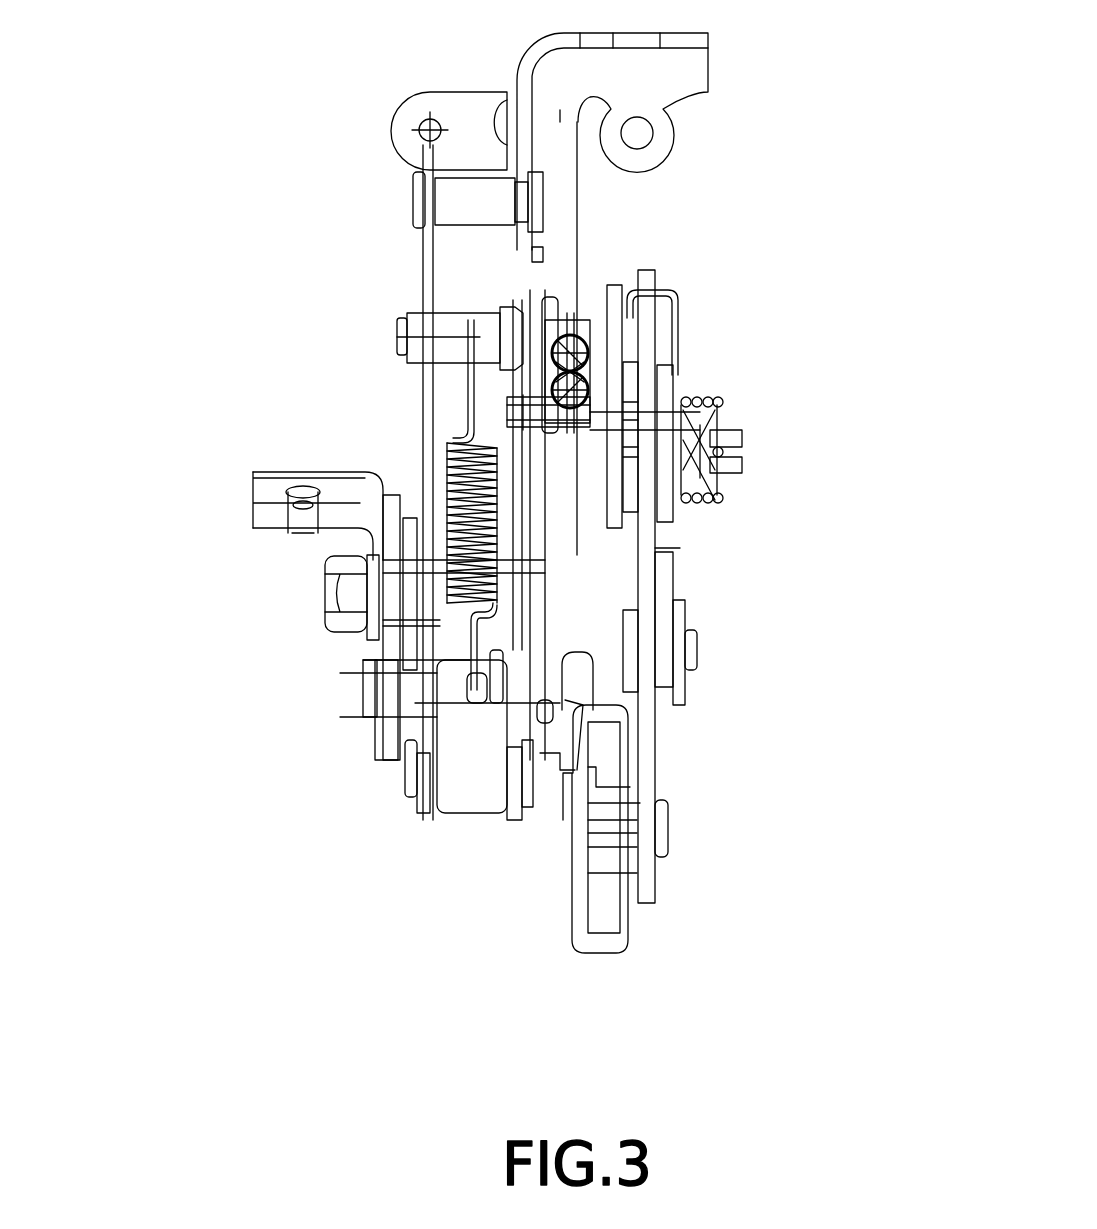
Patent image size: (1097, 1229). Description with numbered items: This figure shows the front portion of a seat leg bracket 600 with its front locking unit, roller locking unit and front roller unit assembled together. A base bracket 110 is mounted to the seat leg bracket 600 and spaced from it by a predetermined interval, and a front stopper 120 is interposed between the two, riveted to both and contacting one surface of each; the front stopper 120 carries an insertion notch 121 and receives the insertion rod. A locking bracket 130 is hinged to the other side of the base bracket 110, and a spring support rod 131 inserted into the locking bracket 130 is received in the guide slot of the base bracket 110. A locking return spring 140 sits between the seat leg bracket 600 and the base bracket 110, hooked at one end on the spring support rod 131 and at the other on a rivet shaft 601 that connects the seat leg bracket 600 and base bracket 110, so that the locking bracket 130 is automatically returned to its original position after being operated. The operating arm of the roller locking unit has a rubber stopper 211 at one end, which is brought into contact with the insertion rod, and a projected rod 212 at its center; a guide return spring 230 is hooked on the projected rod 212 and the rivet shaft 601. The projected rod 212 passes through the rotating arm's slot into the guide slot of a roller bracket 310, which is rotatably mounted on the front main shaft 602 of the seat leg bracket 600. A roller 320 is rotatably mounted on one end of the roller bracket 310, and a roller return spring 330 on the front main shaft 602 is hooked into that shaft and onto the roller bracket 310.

The base bracket 110 is at (417, 437).
The front stopper 120 is at (448, 803).
The insertion notch 121 is at (473, 707).
The locking bracket 130 is at (253, 470).
The spring support rod 131 is at (363, 715).
The locking return spring 140 is at (445, 435).
The rubber stopper 211 is at (560, 755).
The projected rod 212 is at (553, 420).
The guide return spring 230 is at (600, 342).
The roller bracket 310 is at (643, 763).
The roller 320 is at (623, 930).
The roller return spring 330 is at (715, 398).
The seat leg bracket 600 is at (710, 80).
The rivet shaft 601 is at (450, 322).
The front main shaft 602 is at (743, 468).